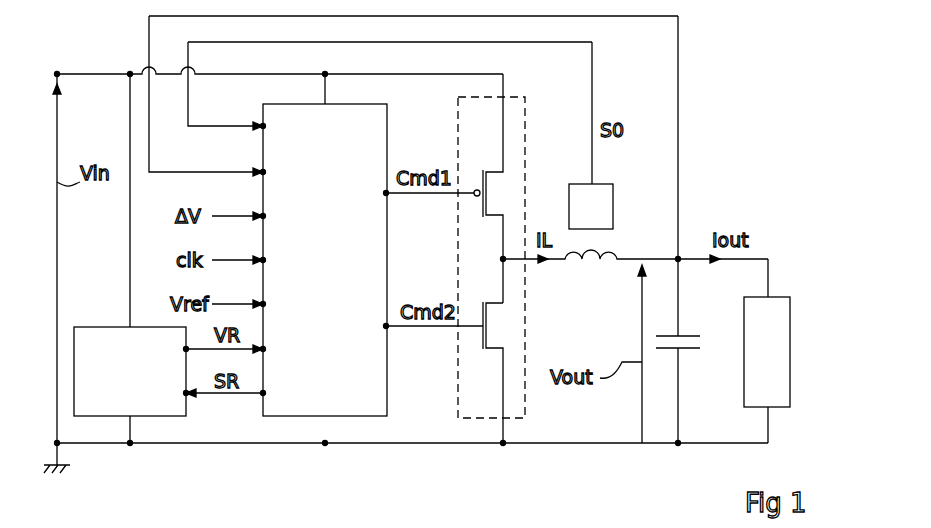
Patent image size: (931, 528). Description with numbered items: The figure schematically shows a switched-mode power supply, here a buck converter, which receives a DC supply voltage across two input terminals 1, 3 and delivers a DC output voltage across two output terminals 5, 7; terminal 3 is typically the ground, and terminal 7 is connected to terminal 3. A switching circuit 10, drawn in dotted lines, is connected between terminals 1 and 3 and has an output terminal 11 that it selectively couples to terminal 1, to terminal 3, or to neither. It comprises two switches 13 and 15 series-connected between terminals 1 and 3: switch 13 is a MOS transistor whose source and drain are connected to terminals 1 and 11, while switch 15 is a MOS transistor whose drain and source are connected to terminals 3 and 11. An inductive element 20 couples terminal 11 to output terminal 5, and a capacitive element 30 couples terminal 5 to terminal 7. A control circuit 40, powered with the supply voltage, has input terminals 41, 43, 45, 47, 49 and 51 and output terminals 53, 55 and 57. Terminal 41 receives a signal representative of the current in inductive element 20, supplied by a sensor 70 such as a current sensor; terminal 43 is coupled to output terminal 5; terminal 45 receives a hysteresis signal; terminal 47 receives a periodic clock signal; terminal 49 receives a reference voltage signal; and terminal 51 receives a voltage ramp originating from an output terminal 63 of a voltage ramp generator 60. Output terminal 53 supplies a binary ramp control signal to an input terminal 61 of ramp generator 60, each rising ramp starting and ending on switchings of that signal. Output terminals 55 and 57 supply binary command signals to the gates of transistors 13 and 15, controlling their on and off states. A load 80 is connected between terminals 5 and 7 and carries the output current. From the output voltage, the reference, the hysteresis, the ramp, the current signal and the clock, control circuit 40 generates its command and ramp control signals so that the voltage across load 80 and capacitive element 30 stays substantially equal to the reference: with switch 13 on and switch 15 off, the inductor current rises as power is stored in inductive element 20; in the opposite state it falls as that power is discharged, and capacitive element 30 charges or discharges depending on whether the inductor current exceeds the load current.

The input terminal 1 is at (57, 70).
The input terminal 3 is at (57, 443).
The output terminal 5 is at (678, 259).
The output terminal 7 is at (678, 446).
The switching circuit 10 is at (520, 97).
The output terminal 11 is at (503, 259).
The switch 13 is at (494, 188).
The switch 15 is at (498, 372).
The inductive element 20 is at (575, 254).
The capacitive element 30 is at (690, 350).
The control circuit 40 is at (325, 260).
The input terminal 41 is at (266, 126).
The input terminal 43 is at (266, 172).
The input terminal 45 is at (266, 216).
The input terminal 47 is at (266, 260).
The input terminal 49 is at (266, 304).
The input terminal 51 is at (266, 349).
The output terminal 53 is at (266, 393).
The output terminal 55 is at (386, 193).
The output terminal 57 is at (386, 326).
The voltage ramp generator 60 is at (130, 371).
The input terminal 61 is at (186, 393).
The output terminal 63 is at (186, 349).
The sensor 70 is at (591, 206).
The load 80 is at (767, 352).